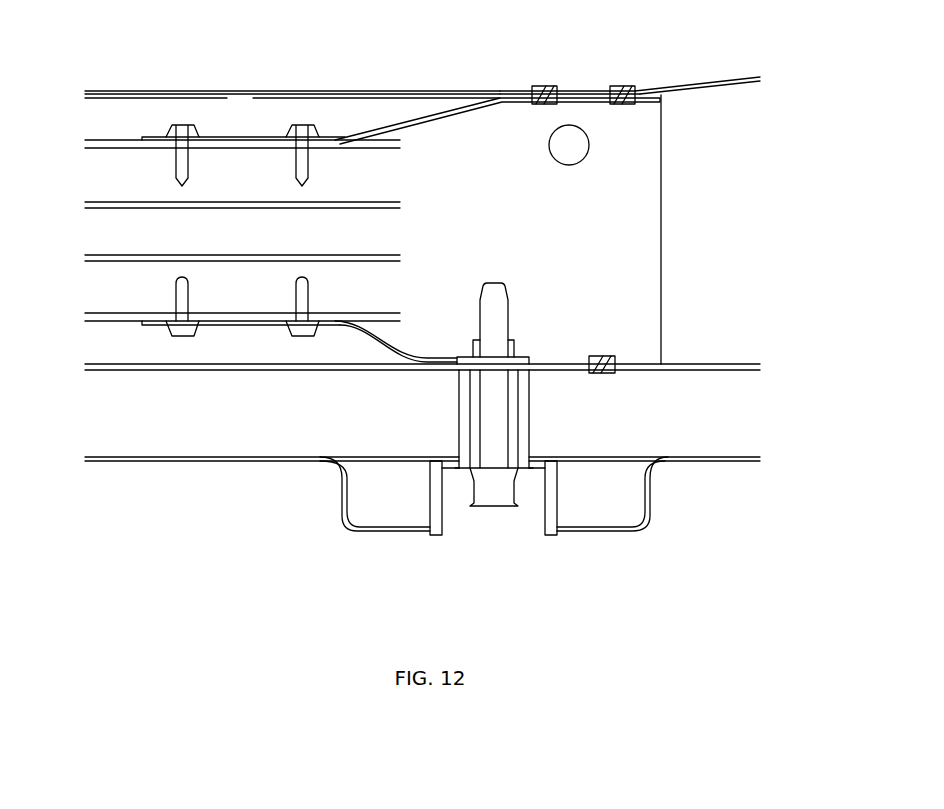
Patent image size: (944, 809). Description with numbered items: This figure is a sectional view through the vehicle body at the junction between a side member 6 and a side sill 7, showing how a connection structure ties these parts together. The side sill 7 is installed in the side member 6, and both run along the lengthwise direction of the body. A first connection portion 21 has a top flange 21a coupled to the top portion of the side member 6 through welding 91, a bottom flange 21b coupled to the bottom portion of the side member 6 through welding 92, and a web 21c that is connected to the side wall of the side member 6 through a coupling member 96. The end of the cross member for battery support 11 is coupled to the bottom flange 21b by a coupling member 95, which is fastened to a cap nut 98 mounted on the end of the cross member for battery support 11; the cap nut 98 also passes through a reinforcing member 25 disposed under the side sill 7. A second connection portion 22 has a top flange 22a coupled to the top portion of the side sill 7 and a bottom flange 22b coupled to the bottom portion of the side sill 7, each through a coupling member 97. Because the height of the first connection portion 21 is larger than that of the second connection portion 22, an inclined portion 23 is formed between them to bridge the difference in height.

The side member 6 is at (283, 93).
The side sill 7 is at (117, 141).
The cross member for battery support 11 is at (600, 531).
The first connection portion 21 is at (582, 87).
The top flange 21a is at (653, 90).
The bottom flange 21b is at (636, 372).
The web 21c is at (642, 218).
The second connection portion 22 is at (243, 297).
The top flange 22a is at (243, 137).
The bottom flange 22b is at (224, 330).
The inclined portion 23 is at (438, 107).
The reinforcing member 25 is at (172, 467).
The welding 91 is at (540, 86).
The welding 92 is at (607, 355).
The coupling member 95 is at (494, 494).
The coupling member 96 is at (590, 142).
The coupling member 97 is at (182, 125).
The cap nut 98 is at (434, 494).